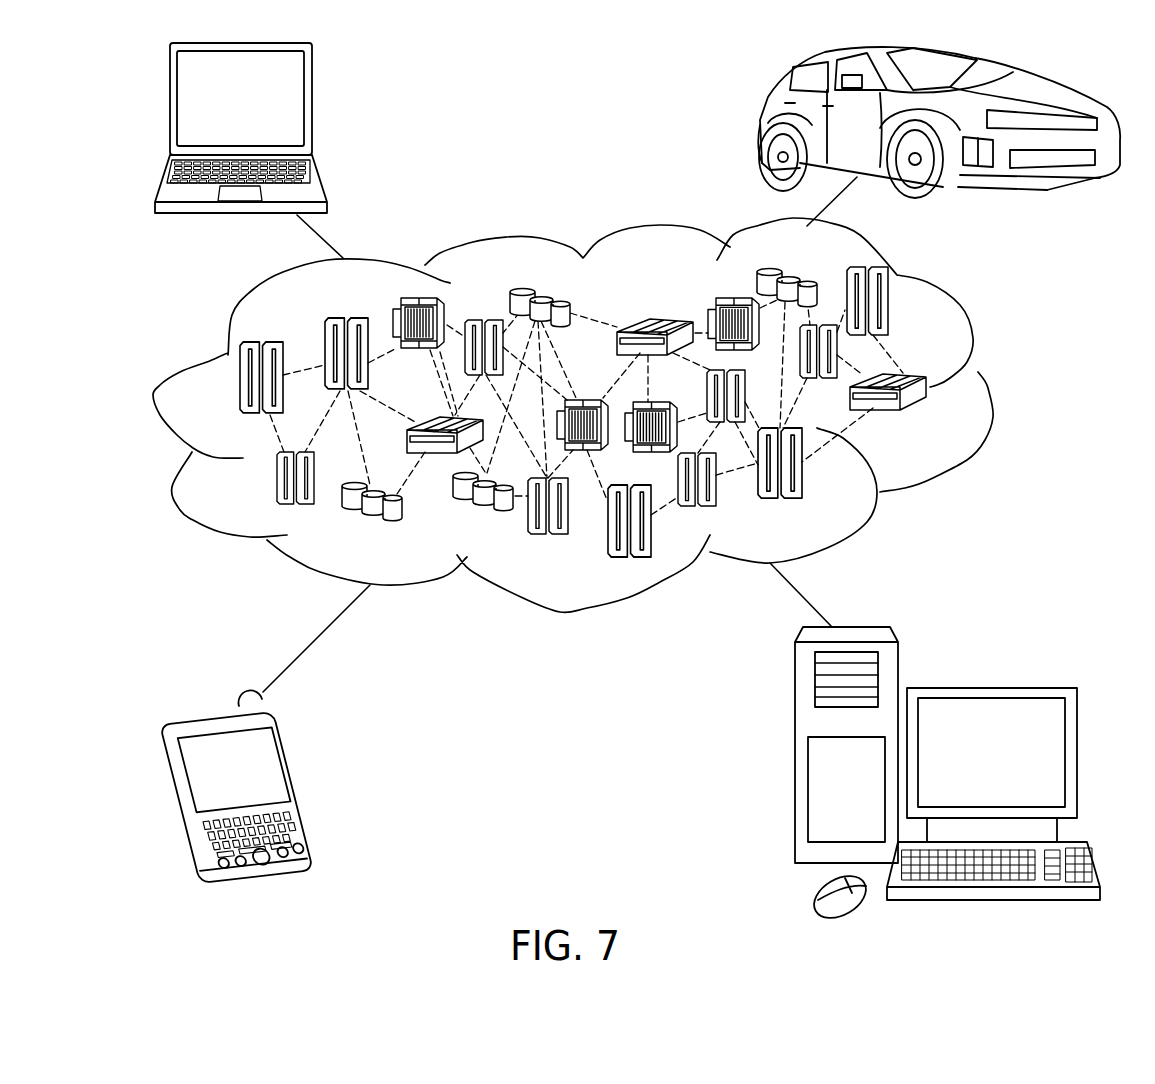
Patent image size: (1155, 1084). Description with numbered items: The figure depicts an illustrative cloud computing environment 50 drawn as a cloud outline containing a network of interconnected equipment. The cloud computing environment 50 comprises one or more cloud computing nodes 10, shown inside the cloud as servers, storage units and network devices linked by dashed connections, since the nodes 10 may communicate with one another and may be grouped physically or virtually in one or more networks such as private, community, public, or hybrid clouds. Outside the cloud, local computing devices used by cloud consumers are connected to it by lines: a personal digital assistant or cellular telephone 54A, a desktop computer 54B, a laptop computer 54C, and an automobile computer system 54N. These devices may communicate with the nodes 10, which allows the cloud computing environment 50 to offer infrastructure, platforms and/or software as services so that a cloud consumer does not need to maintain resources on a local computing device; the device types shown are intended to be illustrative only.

The cloud computing node 10 is at (932, 420).
The cloud computing environment 50 is at (988, 388).
The personal digital assistant (PDA) or cellular telephone 54A is at (300, 780).
The desktop computer 54B is at (988, 685).
The laptop computer 54C is at (312, 107).
The automobile computer system 54N is at (762, 123).